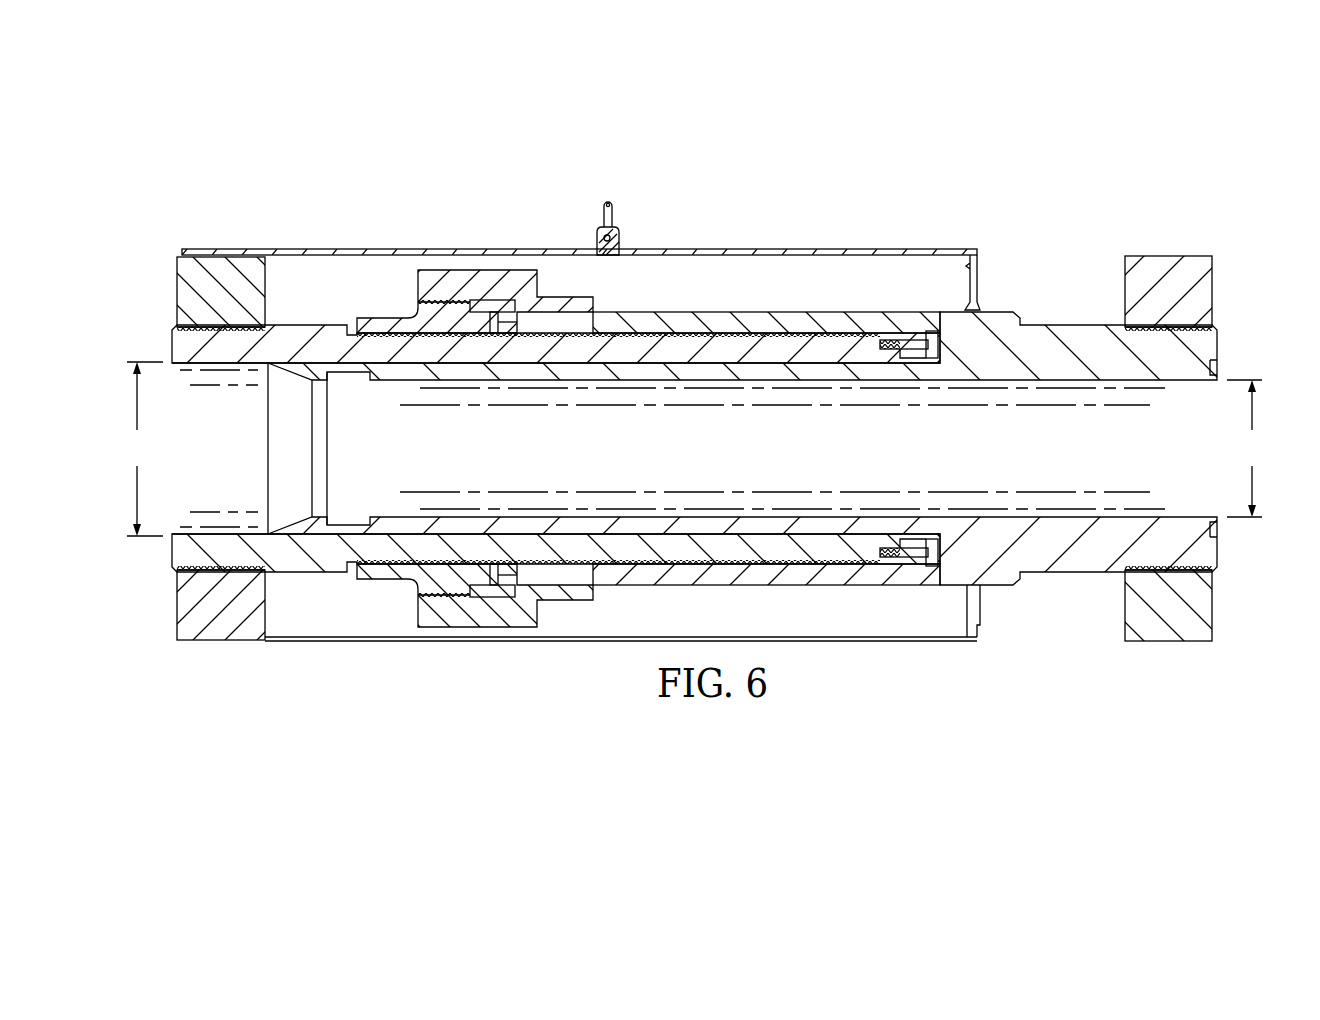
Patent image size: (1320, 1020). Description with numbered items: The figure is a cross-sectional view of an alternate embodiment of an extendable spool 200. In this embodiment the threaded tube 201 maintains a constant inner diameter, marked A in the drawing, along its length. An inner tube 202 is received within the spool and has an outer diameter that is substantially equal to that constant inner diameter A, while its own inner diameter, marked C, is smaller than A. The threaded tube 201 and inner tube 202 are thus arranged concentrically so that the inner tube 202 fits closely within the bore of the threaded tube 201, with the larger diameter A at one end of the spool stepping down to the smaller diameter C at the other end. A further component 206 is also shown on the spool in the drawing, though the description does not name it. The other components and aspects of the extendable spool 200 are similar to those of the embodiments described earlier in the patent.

The extendable spool 200 is at (377, 130).
The threaded tube 201 is at (172, 348).
The inner tube 202 is at (1218, 350).
The retaining nut 206 is at (540, 297).